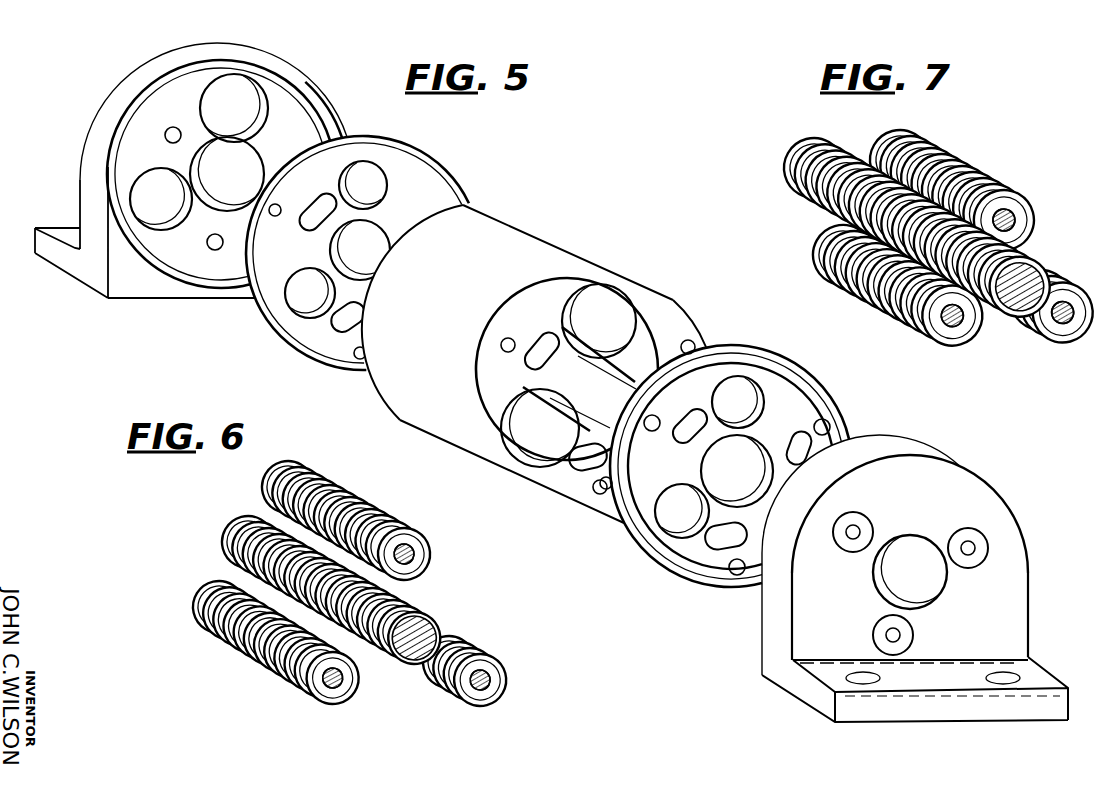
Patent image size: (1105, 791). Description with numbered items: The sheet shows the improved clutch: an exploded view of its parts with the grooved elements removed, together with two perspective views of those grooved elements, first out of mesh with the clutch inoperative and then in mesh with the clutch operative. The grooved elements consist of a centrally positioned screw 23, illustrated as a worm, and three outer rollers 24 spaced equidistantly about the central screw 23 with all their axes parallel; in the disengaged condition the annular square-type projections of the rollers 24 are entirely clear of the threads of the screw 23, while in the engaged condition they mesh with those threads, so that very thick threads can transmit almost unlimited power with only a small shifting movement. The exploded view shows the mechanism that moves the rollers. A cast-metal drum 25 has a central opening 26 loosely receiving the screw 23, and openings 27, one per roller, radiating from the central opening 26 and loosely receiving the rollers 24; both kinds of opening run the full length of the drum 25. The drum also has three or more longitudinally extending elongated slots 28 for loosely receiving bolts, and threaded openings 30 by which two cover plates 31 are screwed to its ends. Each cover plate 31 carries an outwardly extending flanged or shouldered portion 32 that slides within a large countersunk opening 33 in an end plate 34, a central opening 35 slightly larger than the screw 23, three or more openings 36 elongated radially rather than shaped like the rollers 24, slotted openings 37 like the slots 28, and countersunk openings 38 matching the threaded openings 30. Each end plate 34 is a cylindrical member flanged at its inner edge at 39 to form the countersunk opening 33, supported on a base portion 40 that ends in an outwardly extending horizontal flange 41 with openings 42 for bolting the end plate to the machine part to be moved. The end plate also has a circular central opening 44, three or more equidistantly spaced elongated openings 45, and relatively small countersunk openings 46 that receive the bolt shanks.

In FIG. 6, the central screw 23 is at (237, 535).
In FIG. 7, the central screw 23 is at (812, 141).
In FIG. 6, the outer rollers 24 is at (328, 469).
In FIG. 7, the outer rollers 24 is at (950, 148).
In FIG. 5, the drum 25 is at (522, 227).
In FIG. 5, the central opening 26 is at (620, 370).
In FIG. 5, the openings 27 is at (620, 312).
In FIG. 5, the slots 28 is at (542, 333).
In FIG. 5, the threaded openings 30 is at (501, 346).
In FIG. 5, the cover plates 31 is at (393, 146).
In FIG. 5, the flanged portion 32 is at (637, 541).
In FIG. 5, the countersunk opening 33 is at (305, 100).
In FIG. 5, the end plates 34 is at (125, 74).
In FIG. 5, the central openings 35 is at (382, 231).
In FIG. 5, the openings 36 is at (388, 183).
In FIG. 5, the slotted openings 37 is at (331, 199).
In FIG. 5, the countersunk openings 38 is at (275, 216).
In FIG. 5, the flange 39 is at (338, 114).
In FIG. 5, the base portion 40 is at (92, 211).
In FIG. 5, the horizontal flange 41 is at (42, 256).
In FIG. 5, the openings 42 is at (866, 682).
In FIG. 5, the central opening 44 is at (252, 165).
In FIG. 5, the openings 45 is at (209, 103).
In FIG. 5, the countersunk openings 46 is at (166, 139).